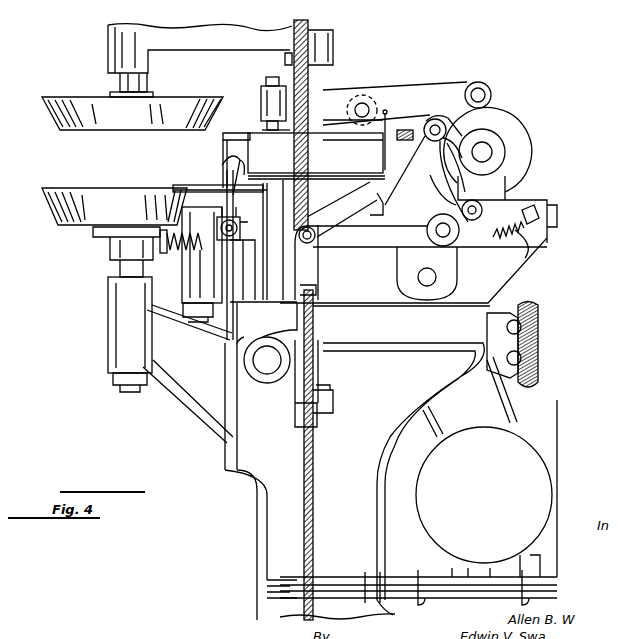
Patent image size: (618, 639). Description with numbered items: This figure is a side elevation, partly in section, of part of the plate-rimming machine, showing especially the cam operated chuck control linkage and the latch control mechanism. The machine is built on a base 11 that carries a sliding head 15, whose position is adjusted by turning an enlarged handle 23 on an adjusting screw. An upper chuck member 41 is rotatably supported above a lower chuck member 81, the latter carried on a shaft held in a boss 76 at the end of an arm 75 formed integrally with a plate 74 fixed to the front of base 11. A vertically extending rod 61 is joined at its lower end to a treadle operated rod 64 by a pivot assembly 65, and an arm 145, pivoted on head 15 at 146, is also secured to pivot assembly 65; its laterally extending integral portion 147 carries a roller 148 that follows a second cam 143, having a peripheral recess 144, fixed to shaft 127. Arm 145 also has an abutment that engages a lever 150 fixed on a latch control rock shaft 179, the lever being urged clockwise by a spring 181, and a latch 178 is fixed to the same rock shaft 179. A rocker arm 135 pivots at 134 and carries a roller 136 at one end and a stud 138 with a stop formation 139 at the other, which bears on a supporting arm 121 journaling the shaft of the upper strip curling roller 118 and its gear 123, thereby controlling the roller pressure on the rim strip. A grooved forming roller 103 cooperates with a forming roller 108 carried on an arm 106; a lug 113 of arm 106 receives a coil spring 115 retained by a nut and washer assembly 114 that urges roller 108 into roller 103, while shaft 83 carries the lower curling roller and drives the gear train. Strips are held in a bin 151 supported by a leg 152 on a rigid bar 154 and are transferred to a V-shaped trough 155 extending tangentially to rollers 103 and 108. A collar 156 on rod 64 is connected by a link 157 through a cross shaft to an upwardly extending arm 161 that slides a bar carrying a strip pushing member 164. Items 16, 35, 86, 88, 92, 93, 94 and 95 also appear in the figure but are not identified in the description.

The base 11 is at (372, 508).
The head 15 is at (530, 200).
The edge 16 is at (557, 243).
The enlarged handle 23 is at (540, 324).
The arm 35 is at (205, 44).
The upper chuck member 41 is at (58, 115).
The vertically extending rod 61 is at (308, 35).
The treadle operated rod 64 is at (313, 468).
The pivot assembly 65 is at (307, 243).
The plate 74 is at (226, 444).
The arm 75 is at (180, 388).
The boss 76 is at (110, 349).
The lower chuck member 81 is at (50, 210).
The shaft 83 is at (558, 212).
The pin 86 is at (440, 287).
The lug 88 is at (406, 295).
The wheel 92 is at (522, 437).
The collar 93 is at (418, 568).
The collar 94 is at (514, 558).
The shaft 95 is at (470, 575).
The grooved forming roller 103 is at (255, 191).
The arm 106 is at (190, 288).
The forming roller 108 is at (198, 185).
The lug 113 is at (208, 250).
The nut and washer assembly 114 is at (163, 253).
The coil spring 115 is at (172, 233).
The upper strip curling roller 118 is at (233, 133).
The supporting arm 121 is at (330, 140).
The gear 123 is at (396, 130).
The shaft 127 is at (492, 148).
The pivot assembly 134 is at (364, 105).
The rocker arm 135 is at (415, 90).
The roller 136 is at (482, 83).
The stud 138 is at (270, 79).
The stop formation 139 is at (270, 133).
The second cam 143 is at (508, 115).
The peripheral recess 144 is at (452, 125).
The arm 145 is at (370, 240).
The pivot 146 is at (442, 238).
The laterally extending integral portion 147 is at (423, 178).
The roller 148 is at (434, 120).
The lever 150 is at (500, 240).
The bin 151 is at (360, 165).
The leg 152 is at (315, 232).
The rigid bar 154 is at (266, 375).
The V-shaped trough 155 is at (228, 165).
The collar 156 is at (318, 422).
The link 157 is at (333, 393).
The upwardly extending arm 161 is at (234, 262).
The strip pushing member 164 is at (220, 215).
The latch 178 is at (448, 190).
The latch control rock shaft 179 is at (483, 210).
The spring 181 is at (524, 253).